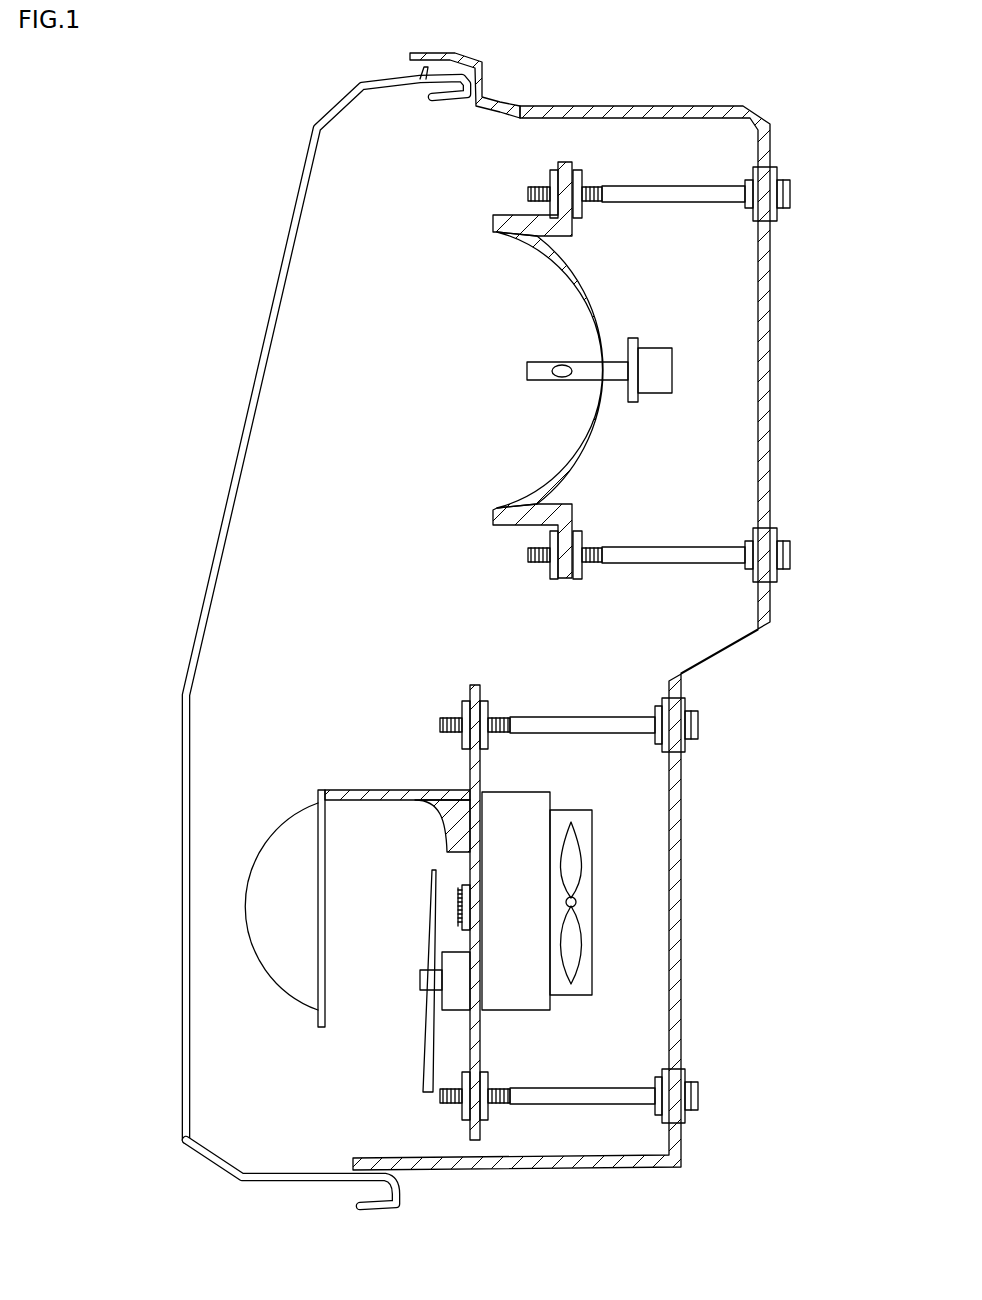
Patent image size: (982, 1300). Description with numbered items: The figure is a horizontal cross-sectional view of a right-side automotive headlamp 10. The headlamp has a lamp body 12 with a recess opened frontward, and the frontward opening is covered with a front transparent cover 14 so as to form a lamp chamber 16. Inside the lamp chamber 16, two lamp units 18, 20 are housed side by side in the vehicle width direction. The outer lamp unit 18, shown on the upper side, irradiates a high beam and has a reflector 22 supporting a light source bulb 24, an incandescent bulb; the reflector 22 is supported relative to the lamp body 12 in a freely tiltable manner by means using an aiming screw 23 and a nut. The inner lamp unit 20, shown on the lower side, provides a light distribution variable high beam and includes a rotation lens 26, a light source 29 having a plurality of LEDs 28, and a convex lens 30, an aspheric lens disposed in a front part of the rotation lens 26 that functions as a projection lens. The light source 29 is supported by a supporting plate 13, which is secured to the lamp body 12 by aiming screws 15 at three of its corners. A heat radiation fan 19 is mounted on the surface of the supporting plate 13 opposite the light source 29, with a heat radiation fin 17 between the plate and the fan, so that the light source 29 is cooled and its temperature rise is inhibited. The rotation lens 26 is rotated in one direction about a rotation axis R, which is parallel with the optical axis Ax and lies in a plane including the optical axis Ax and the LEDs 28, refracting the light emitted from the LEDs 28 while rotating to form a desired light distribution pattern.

The automotive headlamp 10 is at (475, 629).
The lamp body 12 is at (681, 825).
The supporting plate 13 is at (485, 762).
The front transparent cover 14 is at (182, 1062).
The aiming screw 15 is at (625, 735).
The lamp chamber 16 is at (585, 648).
The heat radiation fin 17 is at (527, 1010).
The lamp unit 18 is at (647, 370).
The heat radiation fan 19 is at (578, 1000).
The lamp unit 20 is at (352, 1058).
The reflector 22 is at (603, 432).
The aiming screw 23 is at (705, 178).
The light source bulb 24 is at (527, 370).
The rotation lens 26 is at (412, 1003).
The LED 28 is at (462, 888).
The light source 29 is at (452, 891).
The convex lens 30 is at (280, 828).
The optical axis Ax is at (470, 908).
The rotation axis R is at (462, 980).